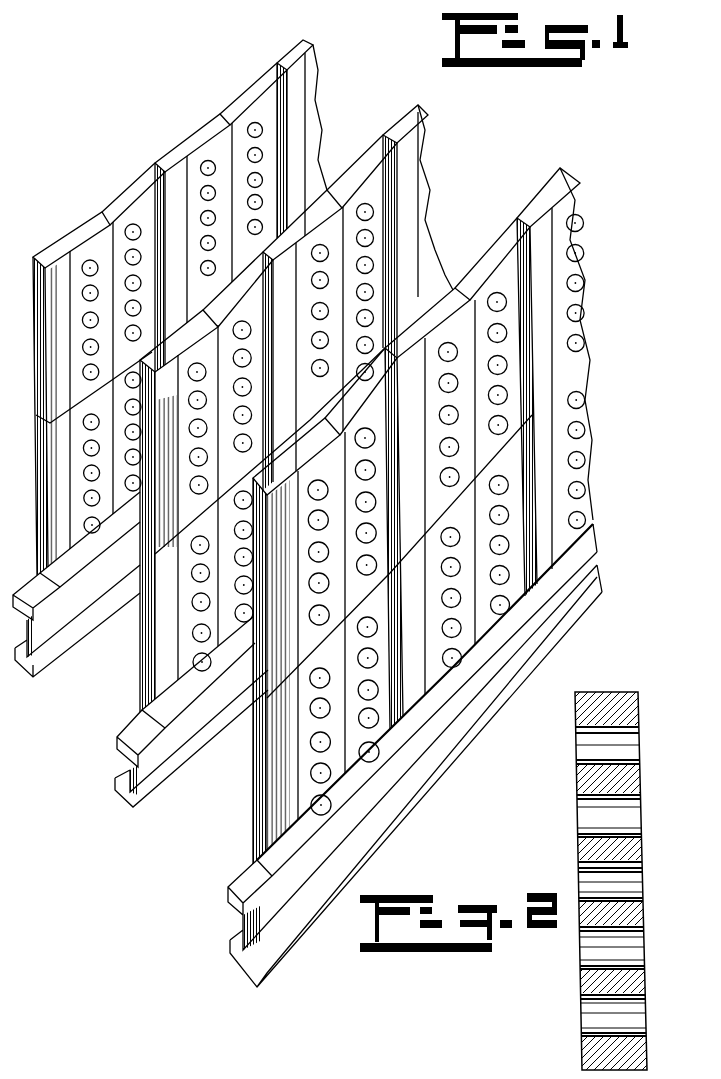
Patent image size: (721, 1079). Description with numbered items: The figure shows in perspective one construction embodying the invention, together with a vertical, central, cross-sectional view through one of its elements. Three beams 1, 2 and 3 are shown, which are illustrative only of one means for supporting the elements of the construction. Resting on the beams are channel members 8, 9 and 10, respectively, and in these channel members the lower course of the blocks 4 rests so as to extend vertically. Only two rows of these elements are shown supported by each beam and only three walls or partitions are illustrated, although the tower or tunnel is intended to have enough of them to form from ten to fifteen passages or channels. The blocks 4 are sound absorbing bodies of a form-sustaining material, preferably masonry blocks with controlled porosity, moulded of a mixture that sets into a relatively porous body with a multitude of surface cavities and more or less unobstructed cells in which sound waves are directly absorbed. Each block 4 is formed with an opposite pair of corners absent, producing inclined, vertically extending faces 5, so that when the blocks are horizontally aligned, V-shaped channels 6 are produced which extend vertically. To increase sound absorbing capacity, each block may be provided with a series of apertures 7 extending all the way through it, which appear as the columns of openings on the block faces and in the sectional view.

In FIG. 1, the beam 1 is at (38, 660).
In FIG. 1, the beam 2 is at (148, 805).
In FIG. 1, the beam 3 is at (262, 972).
In FIG. 1, the block 4 is at (83, 233).
In FIG. 2, the block 4 is at (640, 707).
In FIG. 1, the inclined vertically extending face 5 is at (200, 140).
In FIG. 1, the V-shaped channel 6 is at (450, 289).
In FIG. 1, the aperture 7 is at (92, 497).
In FIG. 2, the aperture 7 is at (625, 817).
In FIG. 1, the channel member 8 is at (75, 570).
In FIG. 1, the channel member 9 is at (200, 693).
In FIG. 1, the channel member 10 is at (360, 797).